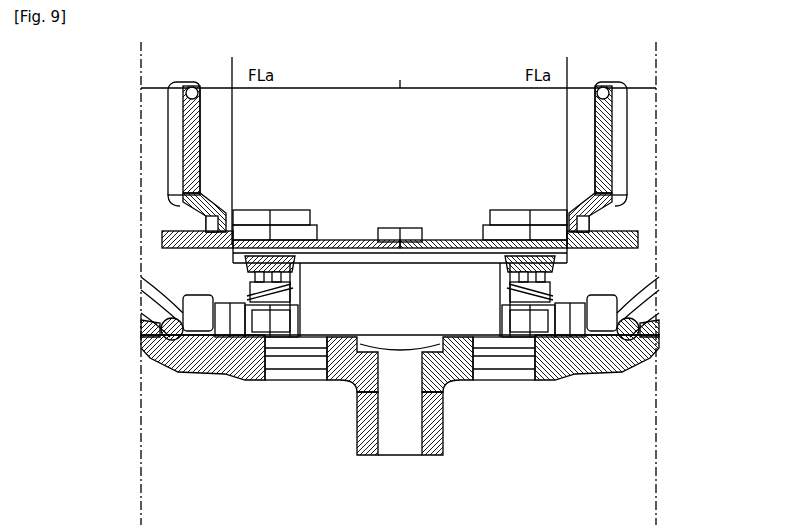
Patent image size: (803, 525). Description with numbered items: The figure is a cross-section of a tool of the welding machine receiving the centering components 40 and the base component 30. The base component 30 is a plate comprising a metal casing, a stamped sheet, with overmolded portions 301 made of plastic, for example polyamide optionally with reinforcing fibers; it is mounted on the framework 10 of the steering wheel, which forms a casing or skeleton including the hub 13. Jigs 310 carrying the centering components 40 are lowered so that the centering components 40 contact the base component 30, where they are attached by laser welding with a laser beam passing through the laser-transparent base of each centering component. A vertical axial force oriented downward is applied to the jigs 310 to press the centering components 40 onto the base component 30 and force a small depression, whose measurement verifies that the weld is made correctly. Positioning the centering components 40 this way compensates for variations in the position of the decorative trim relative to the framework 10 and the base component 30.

The framework 10 is at (197, 372).
The hub 13 is at (357, 440).
The base component 30 is at (637, 243).
The overmolded portions 301 is at (567, 232).
The jigs 310 is at (176, 155).
The centering components 40 is at (200, 215).